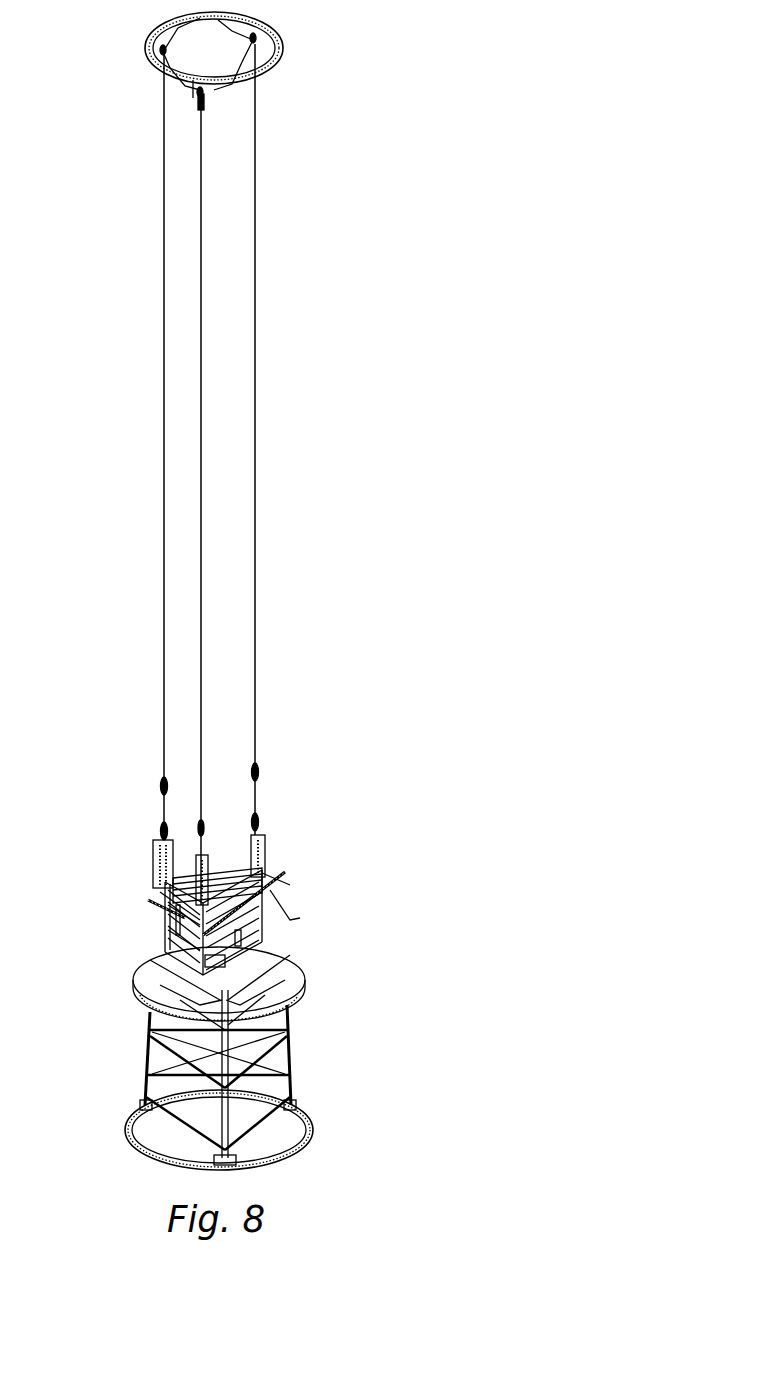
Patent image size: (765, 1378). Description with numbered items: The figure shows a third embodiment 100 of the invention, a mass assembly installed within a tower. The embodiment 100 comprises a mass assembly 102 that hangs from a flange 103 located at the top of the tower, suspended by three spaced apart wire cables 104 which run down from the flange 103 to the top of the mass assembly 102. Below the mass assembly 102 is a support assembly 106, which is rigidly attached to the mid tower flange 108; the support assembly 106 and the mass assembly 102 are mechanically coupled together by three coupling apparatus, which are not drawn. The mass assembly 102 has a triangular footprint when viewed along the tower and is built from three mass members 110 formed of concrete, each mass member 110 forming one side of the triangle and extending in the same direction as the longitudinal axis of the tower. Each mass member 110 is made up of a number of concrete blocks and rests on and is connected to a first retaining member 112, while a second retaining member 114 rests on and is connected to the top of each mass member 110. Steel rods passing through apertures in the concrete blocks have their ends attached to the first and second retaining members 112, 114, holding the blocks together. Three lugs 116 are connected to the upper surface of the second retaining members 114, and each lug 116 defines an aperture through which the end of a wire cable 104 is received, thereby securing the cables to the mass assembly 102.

The third embodiment 100 is at (330, 185).
The mass assembly 102 is at (305, 872).
The flange 103 is at (282, 50).
The wire cables 104 is at (164, 525).
The support assembly 106 is at (286, 1050).
The mid tower flange 108 is at (304, 1135).
The mass members 110 is at (243, 850).
The first retaining member 112 is at (282, 920).
The second retaining member 114 is at (220, 850).
The lugs 116 is at (155, 843).